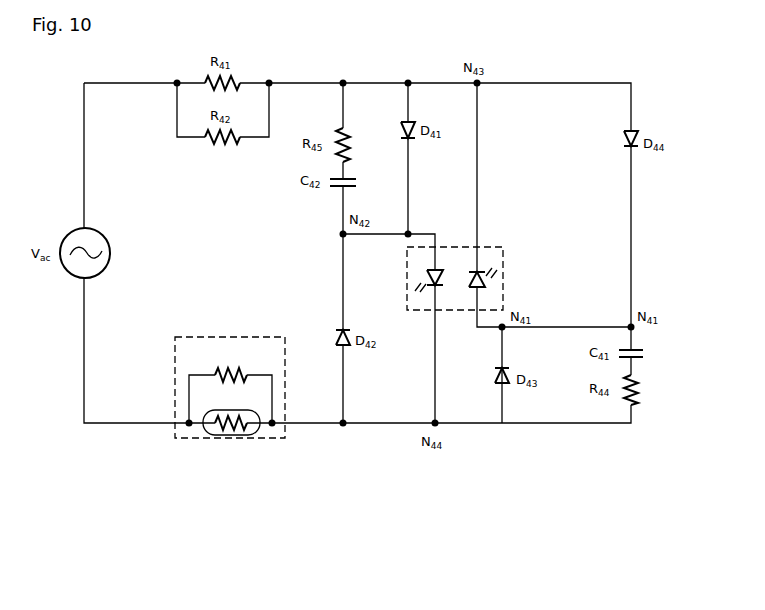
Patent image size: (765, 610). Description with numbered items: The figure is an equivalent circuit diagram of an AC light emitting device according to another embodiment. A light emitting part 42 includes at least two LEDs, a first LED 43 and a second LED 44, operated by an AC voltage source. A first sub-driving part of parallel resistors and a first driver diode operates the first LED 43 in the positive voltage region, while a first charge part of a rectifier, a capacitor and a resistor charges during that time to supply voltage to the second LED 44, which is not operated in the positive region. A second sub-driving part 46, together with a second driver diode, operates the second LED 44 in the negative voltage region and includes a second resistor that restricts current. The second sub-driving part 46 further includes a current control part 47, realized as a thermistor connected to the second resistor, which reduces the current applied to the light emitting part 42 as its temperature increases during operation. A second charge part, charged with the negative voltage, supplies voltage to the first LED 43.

The light emitting part 42 is at (459, 278).
The first LED 43 is at (425, 276).
The second LED 44 is at (481, 283).
The second sub-driving part 46 is at (230, 390).
The current control part 47 is at (231, 437).